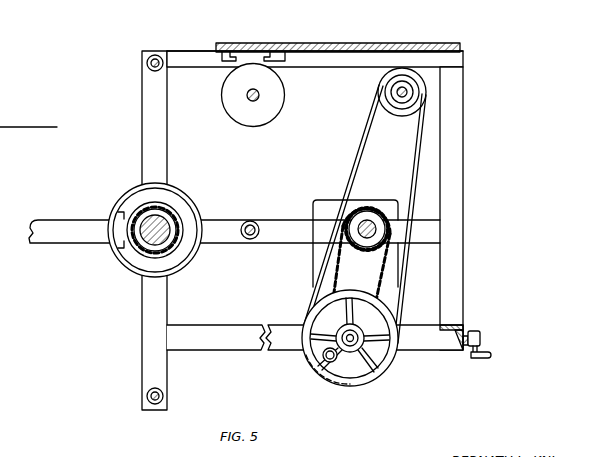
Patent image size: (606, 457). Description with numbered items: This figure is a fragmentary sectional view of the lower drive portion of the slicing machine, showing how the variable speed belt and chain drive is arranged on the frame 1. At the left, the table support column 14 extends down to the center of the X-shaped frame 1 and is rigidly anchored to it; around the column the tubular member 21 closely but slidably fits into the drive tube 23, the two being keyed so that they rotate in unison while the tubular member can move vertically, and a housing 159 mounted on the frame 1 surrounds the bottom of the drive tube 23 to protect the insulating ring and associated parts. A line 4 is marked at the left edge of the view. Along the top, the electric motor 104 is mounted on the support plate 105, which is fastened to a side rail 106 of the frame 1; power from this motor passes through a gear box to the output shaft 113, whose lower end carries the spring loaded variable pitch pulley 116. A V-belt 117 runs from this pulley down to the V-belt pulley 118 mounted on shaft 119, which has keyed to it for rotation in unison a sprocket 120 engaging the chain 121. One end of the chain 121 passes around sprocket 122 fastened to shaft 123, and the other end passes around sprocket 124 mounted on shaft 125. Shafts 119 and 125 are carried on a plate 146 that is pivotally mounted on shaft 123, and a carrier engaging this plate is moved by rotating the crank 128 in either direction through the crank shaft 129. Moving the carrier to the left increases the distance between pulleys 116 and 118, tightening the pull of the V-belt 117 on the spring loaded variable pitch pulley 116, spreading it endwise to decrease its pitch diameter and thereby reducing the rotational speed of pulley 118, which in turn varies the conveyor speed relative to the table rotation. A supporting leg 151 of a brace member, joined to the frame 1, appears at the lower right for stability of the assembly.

The frame 1 is at (220, 219).
The conveyor line 4 is at (15, 127).
The table support column 14 is at (146, 240).
The tubular member 21 is at (178, 207).
The drive tube 23 is at (183, 213).
The electric motor 104 is at (243, 120).
The support plate 105 is at (352, 43).
The side rail 106 is at (200, 51).
The output shaft 113 is at (398, 92).
The spring loaded variable pitch pulley 116 is at (382, 116).
The V-belt 117 is at (352, 154).
The V-belt pulley 118 is at (349, 348).
The shaft 119 is at (388, 378).
The sprocket 120 is at (373, 325).
The chain 121 is at (333, 262).
The sprocket 122 is at (358, 229).
The shaft 123 is at (369, 208).
The sprocket 124 is at (318, 380).
The shaft 125 is at (324, 360).
The crank 128 is at (485, 344).
The crank shaft 129 is at (474, 331).
The plate 146 is at (313, 204).
The supporting leg 151 is at (449, 326).
The housing 159 is at (116, 196).